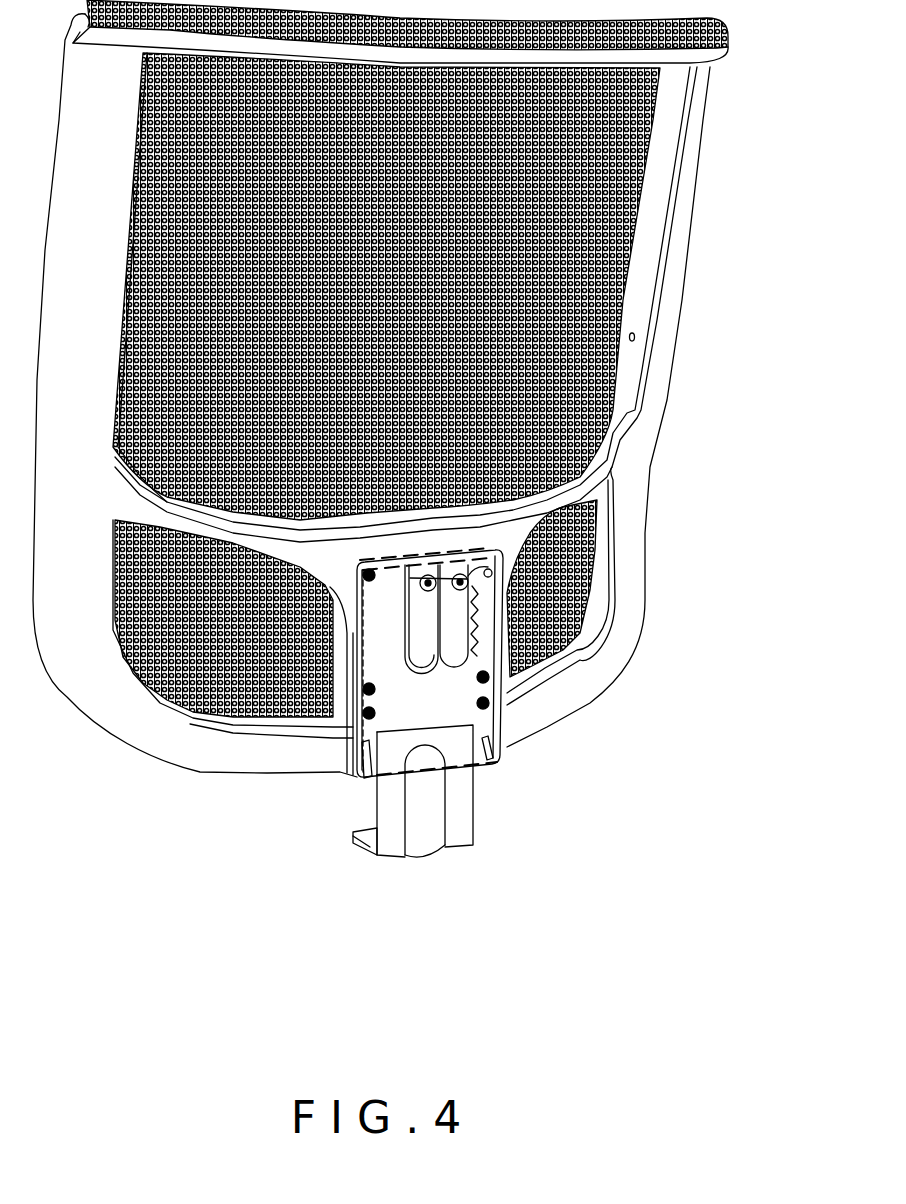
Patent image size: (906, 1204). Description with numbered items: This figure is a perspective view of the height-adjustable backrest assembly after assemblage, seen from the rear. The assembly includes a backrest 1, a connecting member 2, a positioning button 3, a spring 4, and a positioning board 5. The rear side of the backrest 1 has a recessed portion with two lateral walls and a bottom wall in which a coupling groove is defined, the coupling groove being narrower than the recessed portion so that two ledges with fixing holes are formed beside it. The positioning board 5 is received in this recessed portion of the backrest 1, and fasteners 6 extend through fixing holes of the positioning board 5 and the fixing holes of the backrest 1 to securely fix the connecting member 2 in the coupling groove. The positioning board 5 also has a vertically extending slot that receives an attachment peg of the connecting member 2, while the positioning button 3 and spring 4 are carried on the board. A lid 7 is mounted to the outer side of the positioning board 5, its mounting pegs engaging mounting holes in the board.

The backrest 1 is at (697, 360).
The connecting member 2 is at (450, 789).
The positioning button 3 is at (470, 572).
The spring 4 is at (465, 546).
The positioning board 5 is at (450, 718).
The fasteners 6 is at (490, 680).
The lid 7 is at (360, 778).